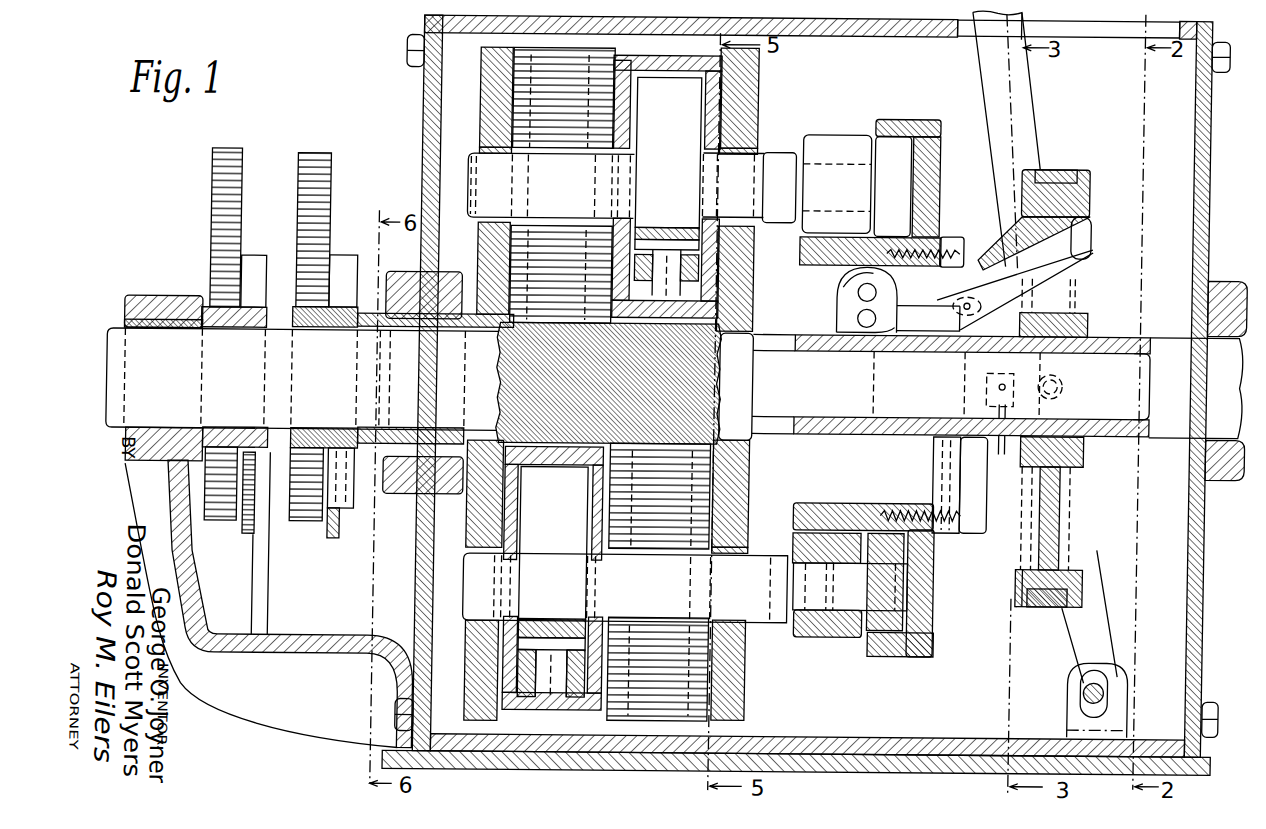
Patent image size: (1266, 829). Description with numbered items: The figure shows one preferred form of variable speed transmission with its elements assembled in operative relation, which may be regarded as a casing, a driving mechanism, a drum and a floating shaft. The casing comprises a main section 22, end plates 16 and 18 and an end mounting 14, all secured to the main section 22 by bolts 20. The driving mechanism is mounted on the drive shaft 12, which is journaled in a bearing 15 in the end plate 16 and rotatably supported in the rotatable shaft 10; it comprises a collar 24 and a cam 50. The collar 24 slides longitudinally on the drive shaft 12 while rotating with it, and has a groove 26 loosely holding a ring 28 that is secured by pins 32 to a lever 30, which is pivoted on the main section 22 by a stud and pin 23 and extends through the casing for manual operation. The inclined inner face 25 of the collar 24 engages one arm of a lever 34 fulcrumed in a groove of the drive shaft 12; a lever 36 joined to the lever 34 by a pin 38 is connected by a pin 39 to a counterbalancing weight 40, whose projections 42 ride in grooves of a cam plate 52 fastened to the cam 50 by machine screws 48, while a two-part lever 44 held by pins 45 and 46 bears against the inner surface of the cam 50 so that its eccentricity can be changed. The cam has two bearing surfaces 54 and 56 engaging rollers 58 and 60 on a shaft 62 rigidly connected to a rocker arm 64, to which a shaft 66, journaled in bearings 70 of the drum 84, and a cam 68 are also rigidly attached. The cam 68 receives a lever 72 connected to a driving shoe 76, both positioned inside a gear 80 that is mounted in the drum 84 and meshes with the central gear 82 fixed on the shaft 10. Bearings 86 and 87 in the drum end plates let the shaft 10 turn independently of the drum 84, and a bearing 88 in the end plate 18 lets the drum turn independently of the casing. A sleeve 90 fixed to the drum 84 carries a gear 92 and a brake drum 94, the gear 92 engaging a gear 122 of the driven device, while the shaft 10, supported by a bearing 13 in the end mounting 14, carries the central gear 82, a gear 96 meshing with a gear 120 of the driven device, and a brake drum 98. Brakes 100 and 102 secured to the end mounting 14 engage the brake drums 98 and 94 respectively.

The rotatable shaft 10 is at (628, 382).
The drive shaft 12 is at (1196, 388).
The bearing 13 is at (190, 330).
The end mounting 14 is at (162, 292).
The bearing 15 is at (1198, 462).
The end plate 16 is at (1198, 528).
The end plate 18 is at (432, 118).
The bolts 20 is at (405, 50).
The main section 22 is at (796, 739).
The stud and pin 23 is at (1092, 690).
The collar 24 is at (1094, 286).
The inclined inner face 25 is at (1096, 214).
The groove 26 is at (1082, 172).
The ring 28 is at (1064, 161).
The lever 30 is at (1045, 347).
The pins 32 is at (1066, 380).
The lever 34 is at (908, 316).
The lever 36 is at (1012, 400).
The pin 38 is at (877, 300).
The pin 39 is at (1005, 379).
The counterbalancing weight 40 is at (991, 528).
The projections 42 is at (963, 528).
The lever 44 is at (855, 274).
The pin 45 is at (863, 288).
The pin 46 is at (863, 313).
The machine screws 48 is at (904, 503).
The cam 50 is at (848, 496).
The cam plate 52 is at (962, 246).
The bearing surface 54 is at (806, 252).
The bearing surface 56 is at (882, 112).
The roller 58 is at (837, 184).
The roller 60 is at (893, 186).
The shaft 62 is at (849, 585).
The rocker arm 64 is at (779, 188).
The shaft 66 is at (628, 387).
The cam 68 is at (512, 632).
The bearings 70 is at (482, 146).
The lever 72 is at (514, 670).
The driving shoe 76 is at (592, 696).
The gear 80 is at (498, 88).
The central gear 82 is at (504, 406).
The drum 84 is at (476, 529).
The bearing 86 is at (482, 251).
The bearing 87 is at (760, 331).
The bearing 88 is at (401, 268).
The sleeve 90 is at (378, 264).
The gear 92 is at (323, 520).
The brake drum 94 is at (350, 262).
The gear 96 is at (212, 262).
The brake drum 98 is at (262, 262).
The brake 100 is at (255, 532).
The brake 102 is at (340, 545).
The gear 120 is at (215, 186).
The gear 122 is at (333, 183).